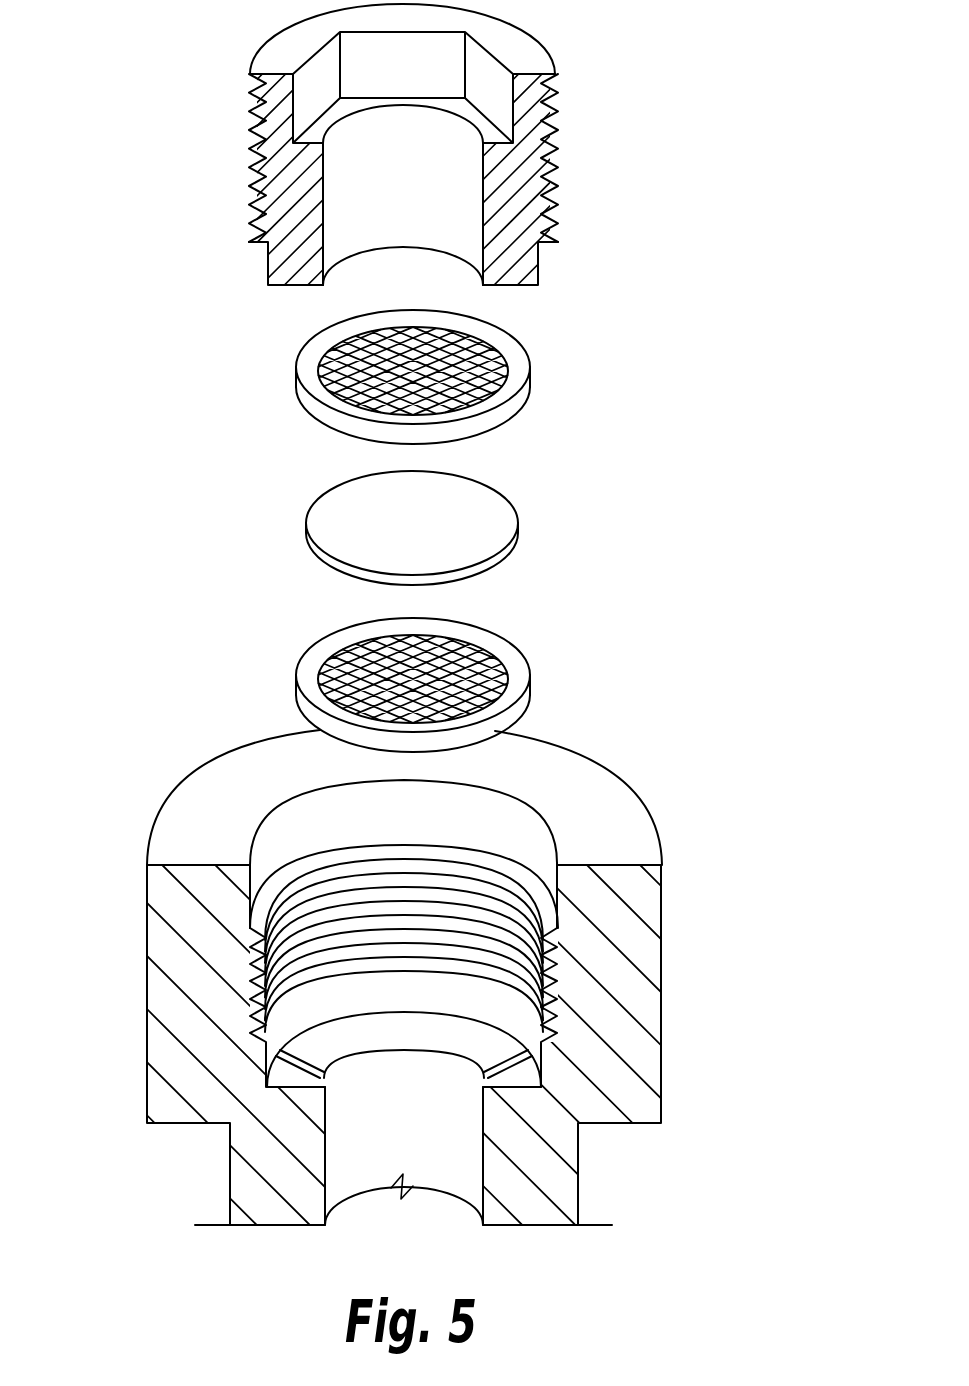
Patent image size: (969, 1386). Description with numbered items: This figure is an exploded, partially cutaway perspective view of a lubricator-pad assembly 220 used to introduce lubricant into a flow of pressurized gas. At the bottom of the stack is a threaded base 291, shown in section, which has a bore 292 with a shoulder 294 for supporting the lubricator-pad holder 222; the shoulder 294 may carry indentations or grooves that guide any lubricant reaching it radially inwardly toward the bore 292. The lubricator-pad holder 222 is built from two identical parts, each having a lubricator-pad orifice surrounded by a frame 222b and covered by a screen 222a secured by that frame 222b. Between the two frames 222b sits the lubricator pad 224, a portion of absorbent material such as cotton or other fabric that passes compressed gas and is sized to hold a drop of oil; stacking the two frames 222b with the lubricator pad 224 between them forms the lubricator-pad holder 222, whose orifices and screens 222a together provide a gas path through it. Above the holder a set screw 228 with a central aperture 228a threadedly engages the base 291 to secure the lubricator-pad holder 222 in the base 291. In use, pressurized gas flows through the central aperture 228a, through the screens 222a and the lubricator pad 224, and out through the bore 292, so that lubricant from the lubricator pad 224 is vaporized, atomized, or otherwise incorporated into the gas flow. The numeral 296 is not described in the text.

The lubricator-pad assembly 220 is at (412, 614).
The lubricator-pad holder 222 is at (422, 511).
The screen 222a is at (520, 397).
The frame 222b is at (347, 360).
The lubricator pad 224 is at (502, 522).
The set screw 228 is at (428, 171).
The central aperture 228a is at (368, 270).
The base 291 is at (455, 977).
The bore 292 is at (497, 838).
The shoulder 294 is at (427, 1037).
The seat chamfer 296 is at (303, 1063).